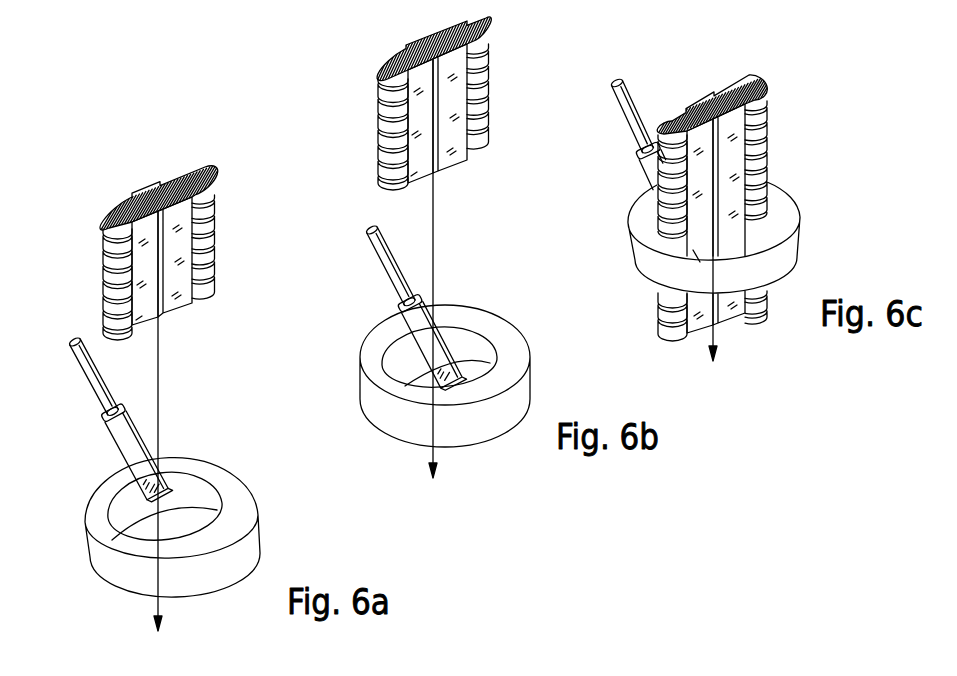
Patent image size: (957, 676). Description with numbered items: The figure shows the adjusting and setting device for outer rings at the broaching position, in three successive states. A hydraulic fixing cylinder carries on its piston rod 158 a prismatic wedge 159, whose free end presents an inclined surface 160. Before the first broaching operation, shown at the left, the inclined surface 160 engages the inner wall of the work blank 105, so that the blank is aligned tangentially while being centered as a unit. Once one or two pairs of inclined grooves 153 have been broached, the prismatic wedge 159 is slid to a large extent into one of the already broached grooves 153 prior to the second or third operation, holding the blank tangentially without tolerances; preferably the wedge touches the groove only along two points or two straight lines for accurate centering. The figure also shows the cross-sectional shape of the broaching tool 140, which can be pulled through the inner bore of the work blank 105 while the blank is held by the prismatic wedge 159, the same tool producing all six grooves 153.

In FIG. 6A, the broaching tool 140 is at (146, 184).
In FIG. 6B, the broaching tool 140 is at (408, 50).
In FIG. 6C, the broaching tool 140 is at (708, 94).
In FIG. 6A, the piston rod 158 is at (86, 378).
In FIG. 6B, the piston rod 158 is at (374, 248).
In FIG. 6C, the piston rod 158 is at (624, 113).
In FIG. 6A, the prismatic wedge 159 is at (130, 448).
In FIG. 6B, the prismatic wedge 159 is at (413, 338).
In FIG. 6C, the prismatic wedge 159 is at (650, 176).
In FIG. 6A, the inclined surface 160 is at (136, 488).
In FIG. 6A, the work blank 105 is at (262, 516).
In FIG. 6B, the work blank 105 is at (372, 417).
In FIG. 6C, the work blank 105 is at (802, 221).
In FIG. 6B, the inclined groove 153 is at (508, 362).
In FIG. 6C, the inclined groove 153 is at (699, 258).